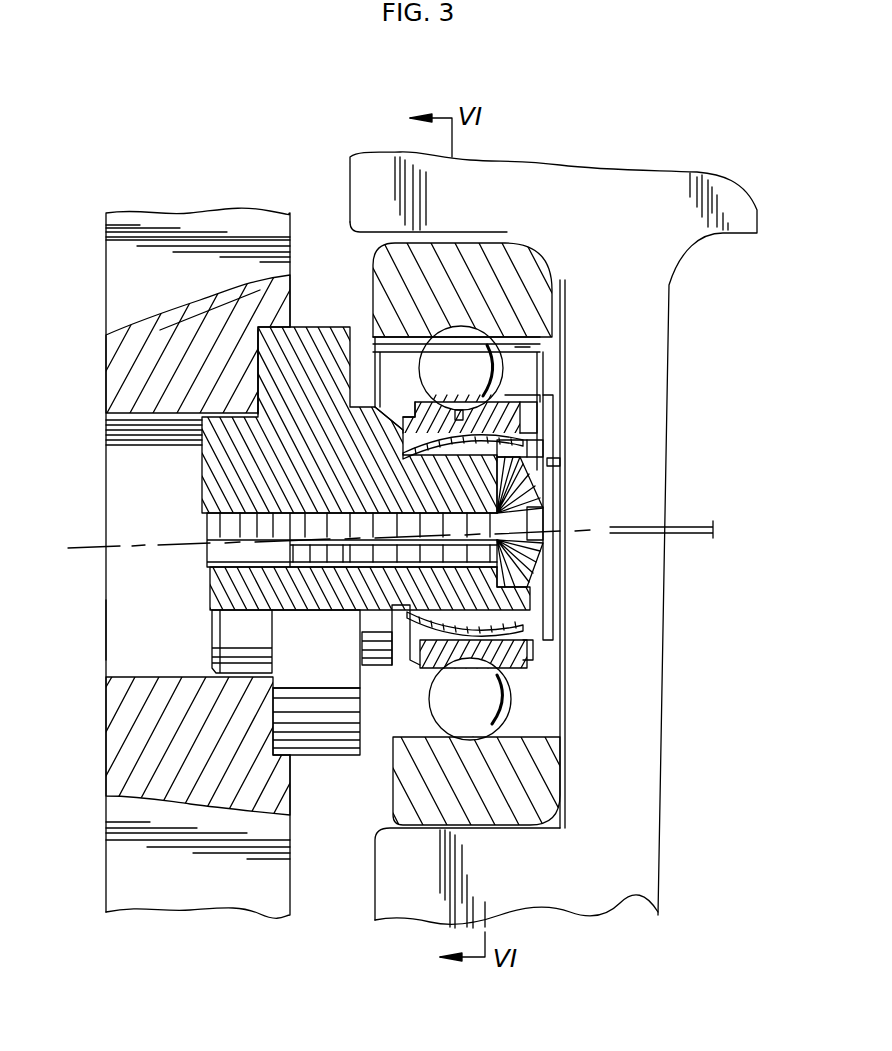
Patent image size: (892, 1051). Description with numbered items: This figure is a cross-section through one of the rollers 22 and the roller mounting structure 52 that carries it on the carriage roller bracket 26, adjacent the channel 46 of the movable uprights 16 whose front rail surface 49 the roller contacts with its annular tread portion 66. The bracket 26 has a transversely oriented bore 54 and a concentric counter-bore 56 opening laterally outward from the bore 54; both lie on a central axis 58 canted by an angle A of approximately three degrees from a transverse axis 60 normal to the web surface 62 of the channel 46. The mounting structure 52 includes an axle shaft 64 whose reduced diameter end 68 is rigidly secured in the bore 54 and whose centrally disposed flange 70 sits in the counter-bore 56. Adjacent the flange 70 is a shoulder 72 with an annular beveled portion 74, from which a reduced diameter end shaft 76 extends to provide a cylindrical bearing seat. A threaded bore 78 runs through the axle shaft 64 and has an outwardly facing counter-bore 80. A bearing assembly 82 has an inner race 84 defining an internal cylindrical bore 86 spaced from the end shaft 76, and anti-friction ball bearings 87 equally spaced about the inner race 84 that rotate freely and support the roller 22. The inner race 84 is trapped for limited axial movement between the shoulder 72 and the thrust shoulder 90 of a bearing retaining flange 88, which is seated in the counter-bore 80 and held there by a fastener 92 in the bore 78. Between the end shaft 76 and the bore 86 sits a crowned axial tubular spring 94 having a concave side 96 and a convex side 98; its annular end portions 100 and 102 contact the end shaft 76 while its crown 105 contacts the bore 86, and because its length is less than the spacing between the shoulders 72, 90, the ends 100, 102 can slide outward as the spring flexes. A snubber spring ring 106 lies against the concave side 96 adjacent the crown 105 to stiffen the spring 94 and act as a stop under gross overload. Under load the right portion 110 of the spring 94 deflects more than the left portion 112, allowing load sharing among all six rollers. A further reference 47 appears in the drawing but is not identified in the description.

The movable uprights 16 is at (423, 890).
The roller 22 is at (395, 178).
The carriage roller bracket 26 is at (128, 878).
The channel 46 is at (532, 795).
The bearing 47 is at (500, 285).
The front rail surface 49 is at (507, 820).
The roller mounting structure 52 is at (322, 226).
The bore 54 is at (150, 675).
The counter-bore 56 is at (292, 335).
The central axis 58 is at (693, 520).
The transverse axis 60 is at (683, 537).
The web surface 62 is at (517, 533).
The axle shaft 64 is at (217, 463).
The annular tread portion 66 is at (445, 255).
The reduced diameter end 68 is at (227, 403).
The flange 70 is at (330, 737).
The shoulder 72 is at (360, 628).
The annular beveled portion 74 is at (422, 358).
The end shaft 76 is at (450, 448).
The threaded bore 78 is at (223, 568).
The counter-bore 80 is at (507, 463).
The bearing assembly 82 is at (522, 350).
The inner race 84 is at (490, 428).
The internal cylindrical bore 86 is at (480, 437).
The anti-friction ball bearings 87 is at (455, 326).
The bearing retaining flange 88 is at (547, 460).
The thrust shoulder 90 is at (545, 410).
The fastener 92 is at (533, 542).
The crowned axial tubular spring 94 is at (467, 406).
The concave side 96 is at (450, 455).
The convex side 98 is at (522, 375).
The annular end portion 100 is at (407, 450).
The annular end portion 102 is at (540, 446).
The crown 105 is at (458, 412).
The snubber spring ring 106 is at (525, 647).
The right portion 110 is at (527, 628).
The left portion 112 is at (423, 662).
The angle A is at (713, 527).